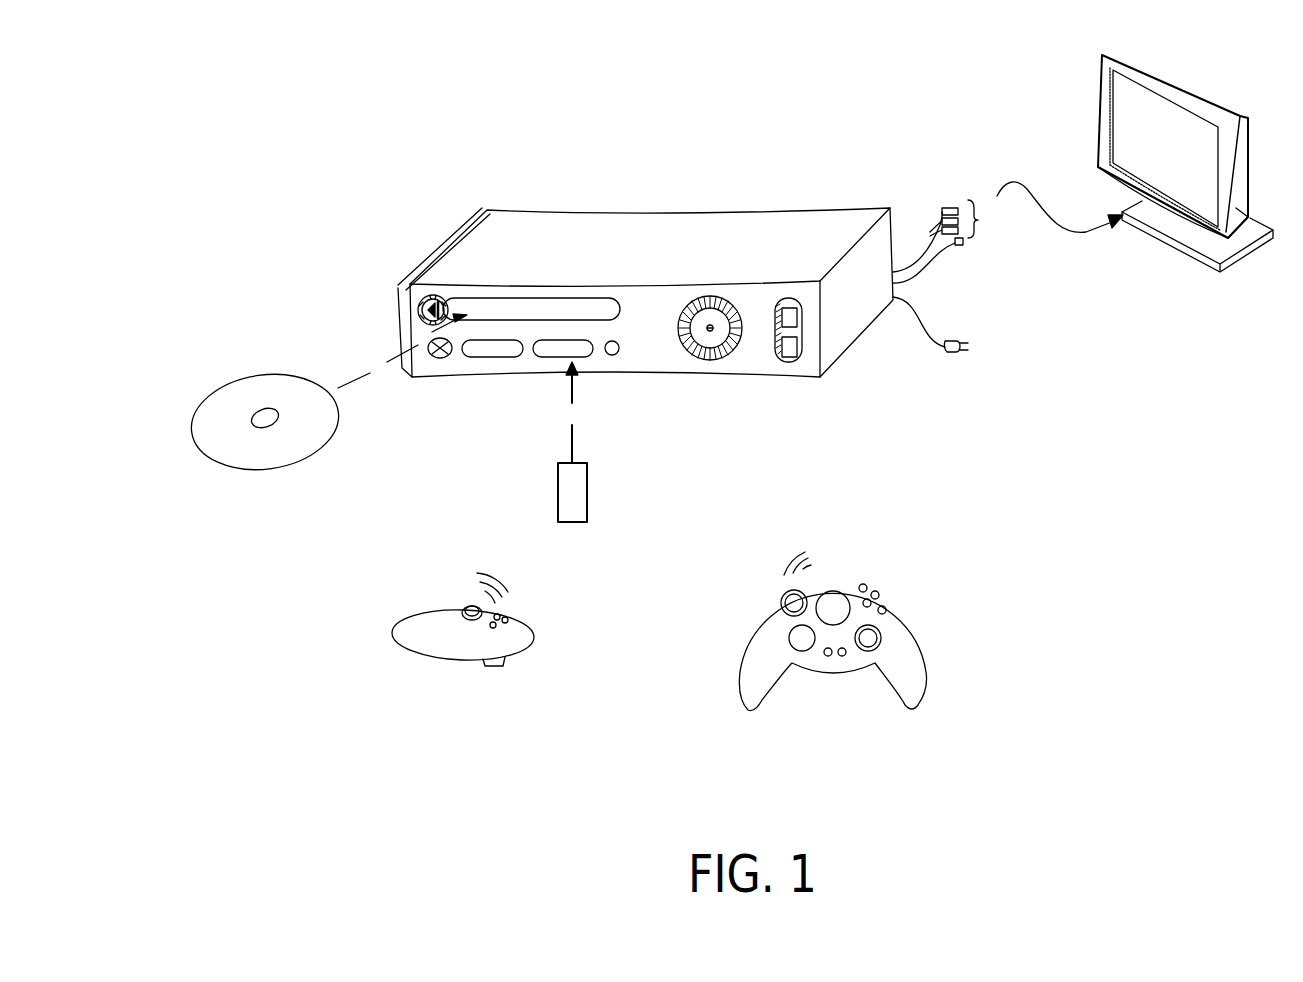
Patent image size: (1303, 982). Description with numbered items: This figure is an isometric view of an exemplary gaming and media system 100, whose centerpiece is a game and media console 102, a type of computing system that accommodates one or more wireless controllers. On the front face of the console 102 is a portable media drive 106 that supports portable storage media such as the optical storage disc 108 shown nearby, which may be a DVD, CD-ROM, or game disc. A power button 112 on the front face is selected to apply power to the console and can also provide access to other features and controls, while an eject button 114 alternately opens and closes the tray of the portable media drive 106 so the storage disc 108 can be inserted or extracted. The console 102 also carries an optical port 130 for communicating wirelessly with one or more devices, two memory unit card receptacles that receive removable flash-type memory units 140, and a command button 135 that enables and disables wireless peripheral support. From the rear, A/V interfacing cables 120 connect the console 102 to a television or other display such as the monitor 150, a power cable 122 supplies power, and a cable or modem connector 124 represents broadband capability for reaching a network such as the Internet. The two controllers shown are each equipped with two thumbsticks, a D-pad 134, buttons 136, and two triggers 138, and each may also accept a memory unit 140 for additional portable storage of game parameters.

The gaming and media system 100 is at (672, 178).
The game and media console 102 is at (520, 220).
The portable media drive 106 is at (541, 300).
The optical storage disc 108 is at (273, 467).
The power button 112 is at (712, 360).
The eject button 114 is at (424, 309).
The A/V interfacing cables 120 is at (950, 207).
The power cable 122 is at (950, 355).
The cable or modem connector 124 is at (962, 246).
The optical port 130 is at (440, 358).
The D-pad 134 is at (792, 637).
The command button 135 is at (612, 355).
The buttons 136 is at (877, 595).
The triggers 138 is at (505, 672).
The memory unit 140 is at (573, 522).
The monitor 150 is at (1100, 114).